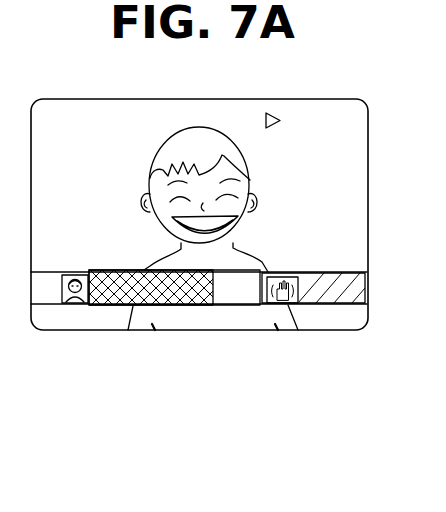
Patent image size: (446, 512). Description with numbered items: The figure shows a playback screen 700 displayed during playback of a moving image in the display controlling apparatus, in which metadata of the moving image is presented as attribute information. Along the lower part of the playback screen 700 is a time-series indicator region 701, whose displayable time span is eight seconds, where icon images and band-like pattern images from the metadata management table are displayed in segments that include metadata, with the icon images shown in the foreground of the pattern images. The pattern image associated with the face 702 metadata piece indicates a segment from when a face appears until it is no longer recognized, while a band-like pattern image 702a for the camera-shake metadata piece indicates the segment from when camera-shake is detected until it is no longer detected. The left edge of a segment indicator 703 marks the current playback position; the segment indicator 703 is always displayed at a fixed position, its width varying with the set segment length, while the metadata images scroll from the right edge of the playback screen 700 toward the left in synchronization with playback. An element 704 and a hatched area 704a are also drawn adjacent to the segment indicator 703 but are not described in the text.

The playback screen 700 is at (62, 99).
The time-series indicator region 701 is at (52, 276).
The face 702 is at (78, 274).
The band-like pattern image 702a is at (130, 270).
The segment indicator 703 is at (283, 277).
The gesture section frame 704 is at (296, 273).
The hatched gesture area 704a is at (357, 287).